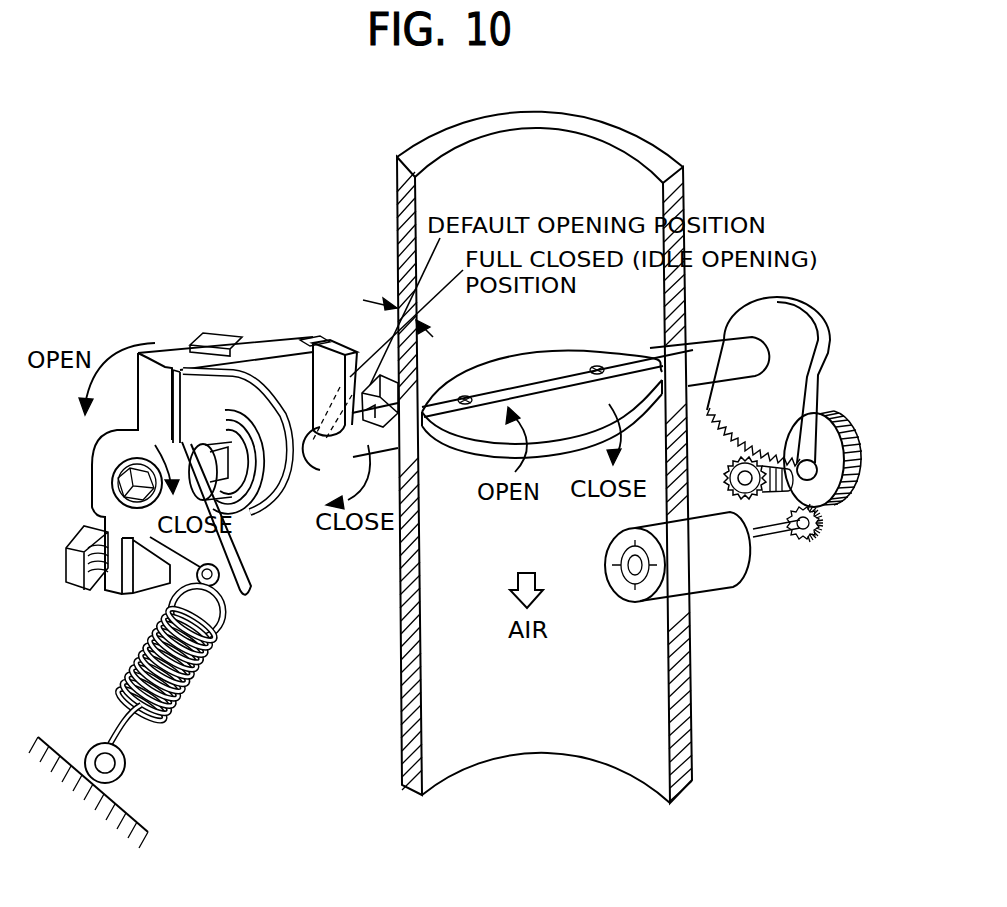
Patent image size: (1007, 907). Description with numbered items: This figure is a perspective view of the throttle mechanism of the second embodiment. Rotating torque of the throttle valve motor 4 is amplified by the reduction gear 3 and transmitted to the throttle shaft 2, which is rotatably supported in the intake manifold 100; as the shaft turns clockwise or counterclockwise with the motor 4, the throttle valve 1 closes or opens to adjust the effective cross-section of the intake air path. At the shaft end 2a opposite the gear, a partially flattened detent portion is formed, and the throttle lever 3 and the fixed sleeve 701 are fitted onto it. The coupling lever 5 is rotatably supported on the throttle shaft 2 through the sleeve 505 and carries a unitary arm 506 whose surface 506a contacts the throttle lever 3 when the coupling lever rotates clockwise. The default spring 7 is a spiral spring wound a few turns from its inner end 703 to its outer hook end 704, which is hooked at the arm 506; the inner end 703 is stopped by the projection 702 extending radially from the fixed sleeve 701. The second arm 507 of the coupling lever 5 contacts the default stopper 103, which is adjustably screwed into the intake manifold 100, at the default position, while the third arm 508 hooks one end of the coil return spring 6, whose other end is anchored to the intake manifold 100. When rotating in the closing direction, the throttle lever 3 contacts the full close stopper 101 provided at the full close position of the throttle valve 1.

The throttle valve 1 is at (540, 352).
The throttle shaft 2 is at (702, 353).
The throttle shaft end portion 2a is at (420, 450).
The throttle lever 3 is at (325, 350).
The throttle valve motor 4 is at (708, 578).
The coupling lever 5 is at (93, 477).
The return spring 6 is at (188, 697).
The default spring 7 is at (266, 498).
The intake manifold 100 is at (690, 728).
The full close stopper 101 is at (415, 370).
The default stopper 103 is at (70, 568).
The sleeve 505 is at (110, 500).
The arm 506 is at (263, 347).
The surface 506a is at (303, 333).
The second arm 507 is at (122, 588).
The third arm 508 is at (237, 590).
The fixed sleeve 701 is at (223, 520).
The projection 702 is at (178, 370).
The inner end 703 is at (290, 386).
The outer hook end 704 is at (213, 333).